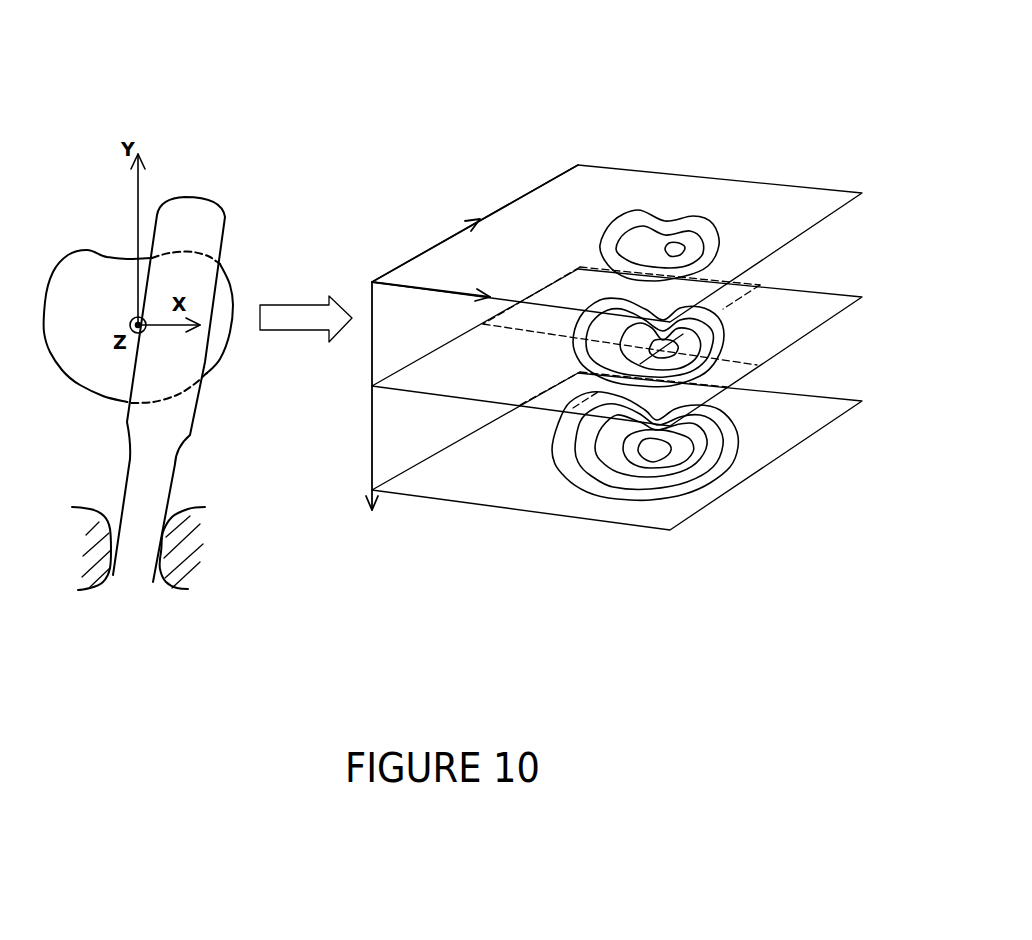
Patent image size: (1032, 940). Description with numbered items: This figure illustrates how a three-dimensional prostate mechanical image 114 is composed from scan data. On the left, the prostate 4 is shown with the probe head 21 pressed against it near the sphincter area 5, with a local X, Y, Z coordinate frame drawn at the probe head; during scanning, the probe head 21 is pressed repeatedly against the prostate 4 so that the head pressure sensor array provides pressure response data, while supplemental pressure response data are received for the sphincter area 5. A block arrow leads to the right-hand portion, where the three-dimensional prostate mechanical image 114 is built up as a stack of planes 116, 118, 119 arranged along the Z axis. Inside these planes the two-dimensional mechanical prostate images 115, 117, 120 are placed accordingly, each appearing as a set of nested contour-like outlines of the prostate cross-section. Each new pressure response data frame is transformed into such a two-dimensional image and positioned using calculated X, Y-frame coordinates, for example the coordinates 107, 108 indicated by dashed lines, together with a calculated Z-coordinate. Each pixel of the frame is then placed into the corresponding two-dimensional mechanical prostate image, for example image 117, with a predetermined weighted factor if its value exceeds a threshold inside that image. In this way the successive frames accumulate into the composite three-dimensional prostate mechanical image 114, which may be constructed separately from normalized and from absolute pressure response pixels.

The prostate 4 is at (62, 280).
The probe head 21 is at (203, 198).
The sphincter area 5 is at (170, 542).
The three-dimensional prostate mechanical image 114 is at (737, 105).
The two-dimensional mechanical prostate image 115 is at (630, 208).
The plane 116 is at (817, 187).
The two-dimensional mechanical prostate image 117 is at (587, 300).
The plane 118 is at (817, 292).
The plane 119 is at (817, 393).
The X, Y-frame coordinate 107 is at (743, 298).
The X, Y-frame coordinate 108 is at (530, 328).
The two-dimensional mechanical prostate image 120 is at (670, 497).